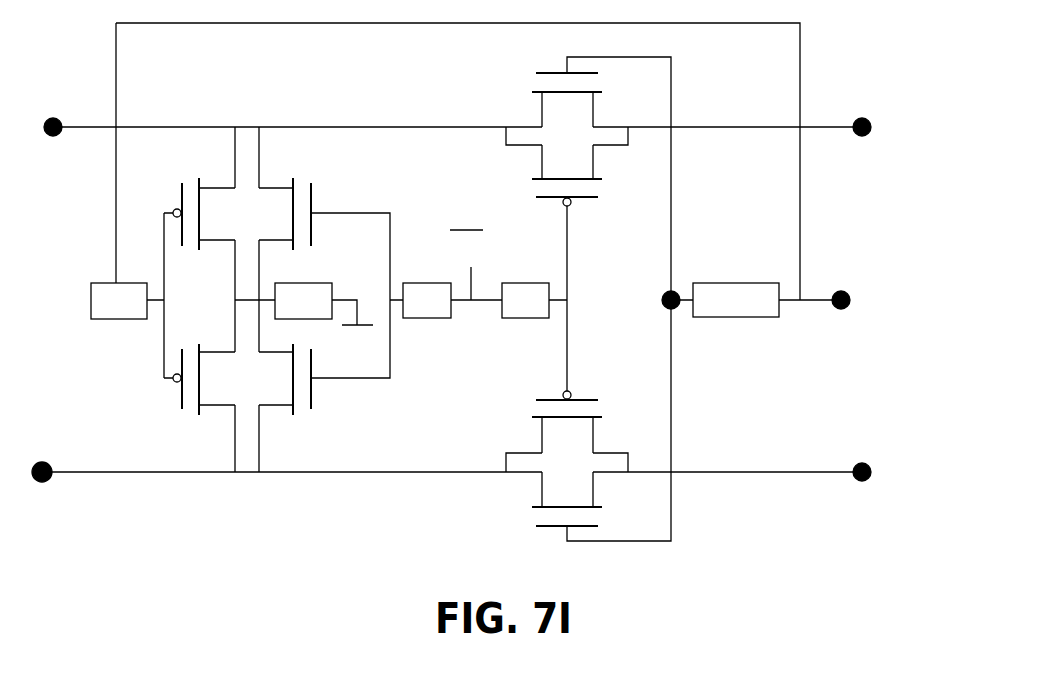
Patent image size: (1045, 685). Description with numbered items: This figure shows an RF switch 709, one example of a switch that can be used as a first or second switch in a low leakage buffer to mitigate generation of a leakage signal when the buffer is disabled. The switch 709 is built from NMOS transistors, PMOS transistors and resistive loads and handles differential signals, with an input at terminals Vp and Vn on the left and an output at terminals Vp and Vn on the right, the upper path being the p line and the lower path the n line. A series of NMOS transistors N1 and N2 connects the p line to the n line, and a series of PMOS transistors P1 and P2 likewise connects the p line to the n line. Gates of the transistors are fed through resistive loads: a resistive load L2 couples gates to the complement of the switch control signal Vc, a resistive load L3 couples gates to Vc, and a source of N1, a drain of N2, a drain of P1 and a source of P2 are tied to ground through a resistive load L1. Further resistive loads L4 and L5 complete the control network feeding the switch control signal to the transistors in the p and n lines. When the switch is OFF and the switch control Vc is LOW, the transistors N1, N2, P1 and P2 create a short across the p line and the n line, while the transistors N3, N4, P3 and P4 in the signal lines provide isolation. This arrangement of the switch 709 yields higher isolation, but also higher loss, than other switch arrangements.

The RF switch 709 is at (488, 332).
The resistive load L1 is at (119, 301).
The resistive load L2 is at (303, 301).
The resistive load L3 is at (427, 300).
The resistive load L4 is at (525, 300).
The resistive load L5 is at (736, 300).
The PMOS transistor P1 is at (187, 214).
The PMOS transistor P2 is at (187, 379).
The PMOS transistor P3 is at (564, 186).
The PMOS transistor P4 is at (564, 413).
The NMOS transistor N1 is at (308, 208).
The NMOS transistor N2 is at (310, 379).
The NMOS transistor N3 is at (563, 85).
The NMOS transistor N4 is at (563, 514).